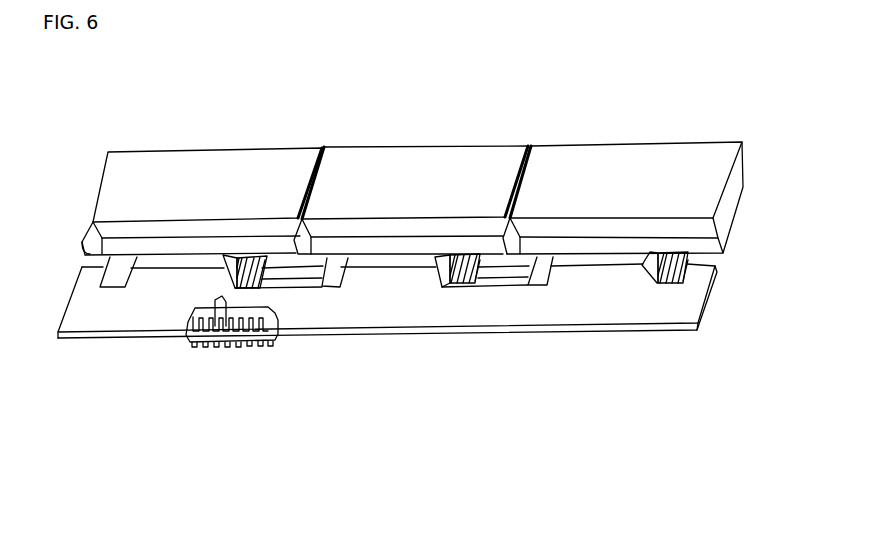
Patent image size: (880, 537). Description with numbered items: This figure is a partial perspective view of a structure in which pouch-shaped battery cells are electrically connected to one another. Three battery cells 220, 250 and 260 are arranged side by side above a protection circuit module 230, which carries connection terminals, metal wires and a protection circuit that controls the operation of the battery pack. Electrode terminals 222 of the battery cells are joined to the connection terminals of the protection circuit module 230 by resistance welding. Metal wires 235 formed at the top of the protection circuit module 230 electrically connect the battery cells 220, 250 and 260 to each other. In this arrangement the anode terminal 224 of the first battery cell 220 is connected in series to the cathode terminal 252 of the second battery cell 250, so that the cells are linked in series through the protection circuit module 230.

The battery cell 220 is at (632, 168).
The second battery cell 250 is at (425, 167).
The battery cell 260 is at (220, 167).
The protection circuit module 230 is at (148, 307).
The electrode terminal 222 is at (672, 284).
The anode terminal 224 is at (540, 279).
The metal wires 235 is at (502, 288).
The cathode terminal 252 is at (455, 288).